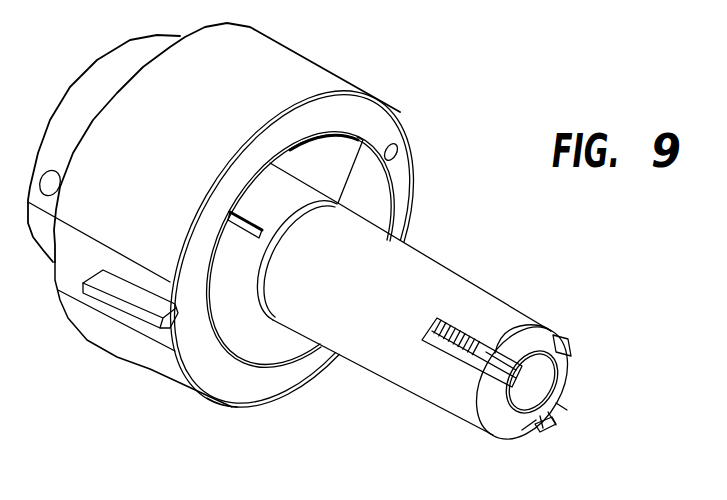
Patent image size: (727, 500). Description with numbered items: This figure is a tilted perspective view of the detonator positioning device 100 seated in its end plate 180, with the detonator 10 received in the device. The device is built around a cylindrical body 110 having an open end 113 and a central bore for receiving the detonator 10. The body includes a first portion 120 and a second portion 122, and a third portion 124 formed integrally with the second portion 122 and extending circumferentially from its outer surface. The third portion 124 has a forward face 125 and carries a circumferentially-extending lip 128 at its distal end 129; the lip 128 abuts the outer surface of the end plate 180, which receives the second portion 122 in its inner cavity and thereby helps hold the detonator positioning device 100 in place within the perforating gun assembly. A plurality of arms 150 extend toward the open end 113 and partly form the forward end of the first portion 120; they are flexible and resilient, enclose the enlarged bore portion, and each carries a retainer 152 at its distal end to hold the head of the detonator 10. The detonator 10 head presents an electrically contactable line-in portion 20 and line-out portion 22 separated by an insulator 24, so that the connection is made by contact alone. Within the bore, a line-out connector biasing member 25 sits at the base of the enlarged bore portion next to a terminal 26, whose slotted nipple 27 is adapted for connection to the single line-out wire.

The detonator positioning device 100 is at (497, 152).
The end plate 180 is at (278, 58).
The first portion 120 is at (388, 352).
The distal end 129 is at (231, 388).
The second portion 122 is at (263, 197).
The circumferentially-extending lip 128 is at (216, 249).
The third portion 124 is at (374, 193).
The forward face 125 is at (374, 210).
The cylindrical body 110 is at (458, 274).
The plurality of arms 150 is at (470, 398).
The line-out portion 22 is at (488, 366).
The line-out connector biasing member 25 is at (442, 325).
The terminal 26 is at (478, 368).
The insulator 24 is at (500, 356).
The line-in portion 20 is at (540, 373).
The slotted nipple 27 is at (557, 397).
The retainer 152 is at (568, 370).
The open end 113 is at (546, 429).
The detonator 10 is at (527, 423).